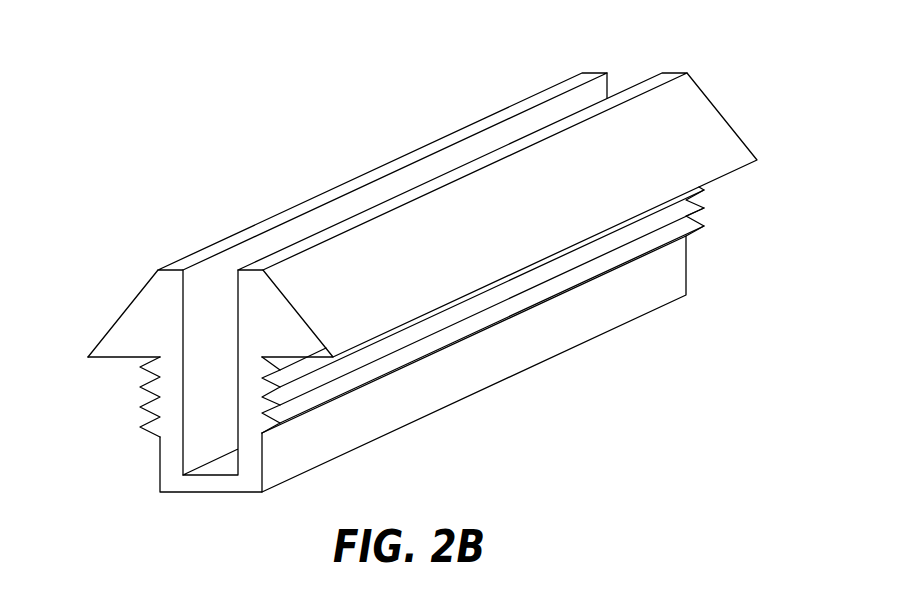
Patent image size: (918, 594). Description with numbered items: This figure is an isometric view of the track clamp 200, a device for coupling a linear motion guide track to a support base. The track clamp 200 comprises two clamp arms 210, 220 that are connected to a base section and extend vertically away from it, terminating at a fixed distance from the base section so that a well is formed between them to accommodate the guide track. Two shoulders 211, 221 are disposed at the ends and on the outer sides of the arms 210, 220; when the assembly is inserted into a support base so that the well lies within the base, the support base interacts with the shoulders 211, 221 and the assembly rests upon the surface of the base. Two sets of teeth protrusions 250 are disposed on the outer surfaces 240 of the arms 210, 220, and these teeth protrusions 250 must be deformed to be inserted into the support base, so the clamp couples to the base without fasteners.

The track clamp 200 is at (155, 104).
The clamp arm 210 is at (181, 268).
The shoulder 211 is at (160, 348).
The clamp arm 220 is at (257, 268).
The shoulder 221 is at (290, 348).
The outer surface 240 is at (158, 457).
The teeth protrusions 250 is at (140, 364).